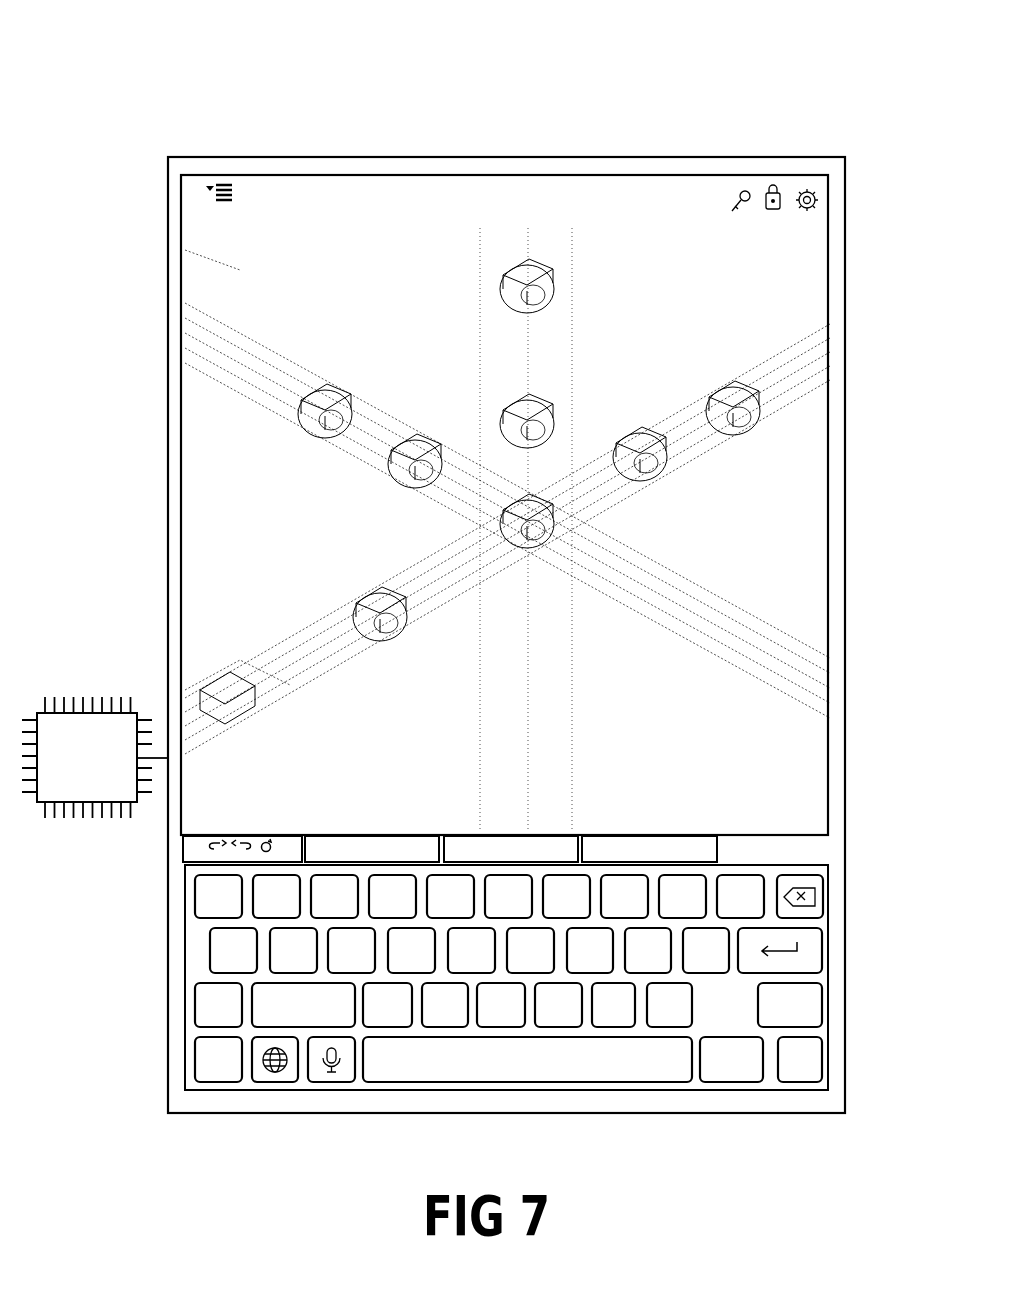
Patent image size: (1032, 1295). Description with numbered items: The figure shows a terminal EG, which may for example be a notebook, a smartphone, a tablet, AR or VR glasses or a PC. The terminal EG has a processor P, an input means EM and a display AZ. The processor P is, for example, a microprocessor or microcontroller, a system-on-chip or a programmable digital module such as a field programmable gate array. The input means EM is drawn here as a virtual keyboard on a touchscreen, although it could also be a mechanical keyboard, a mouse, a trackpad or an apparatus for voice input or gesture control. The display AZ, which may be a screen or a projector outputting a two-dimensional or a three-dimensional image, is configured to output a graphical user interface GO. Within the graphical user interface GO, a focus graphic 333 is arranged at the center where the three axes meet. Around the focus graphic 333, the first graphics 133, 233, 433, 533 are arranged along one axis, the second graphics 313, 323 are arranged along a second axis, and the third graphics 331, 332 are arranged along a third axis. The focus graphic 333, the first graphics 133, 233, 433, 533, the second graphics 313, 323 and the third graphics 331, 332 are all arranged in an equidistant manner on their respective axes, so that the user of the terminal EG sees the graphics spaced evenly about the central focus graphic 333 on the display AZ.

The terminal EG is at (117, 112).
The graphical user interface GO is at (698, 190).
The display AZ is at (830, 600).
The input means EM is at (830, 860).
The processor P is at (96, 771).
The first graphic 133 is at (217, 769).
The first graphic 233 is at (399, 671).
The second graphic 313 is at (265, 420).
The second graphic 323 is at (353, 476).
The third graphic 331 is at (462, 284).
The third graphic 332 is at (472, 419).
The focus graphic 333 is at (554, 589).
The first graphic 433 is at (664, 506).
The first graphic 533 is at (753, 449).